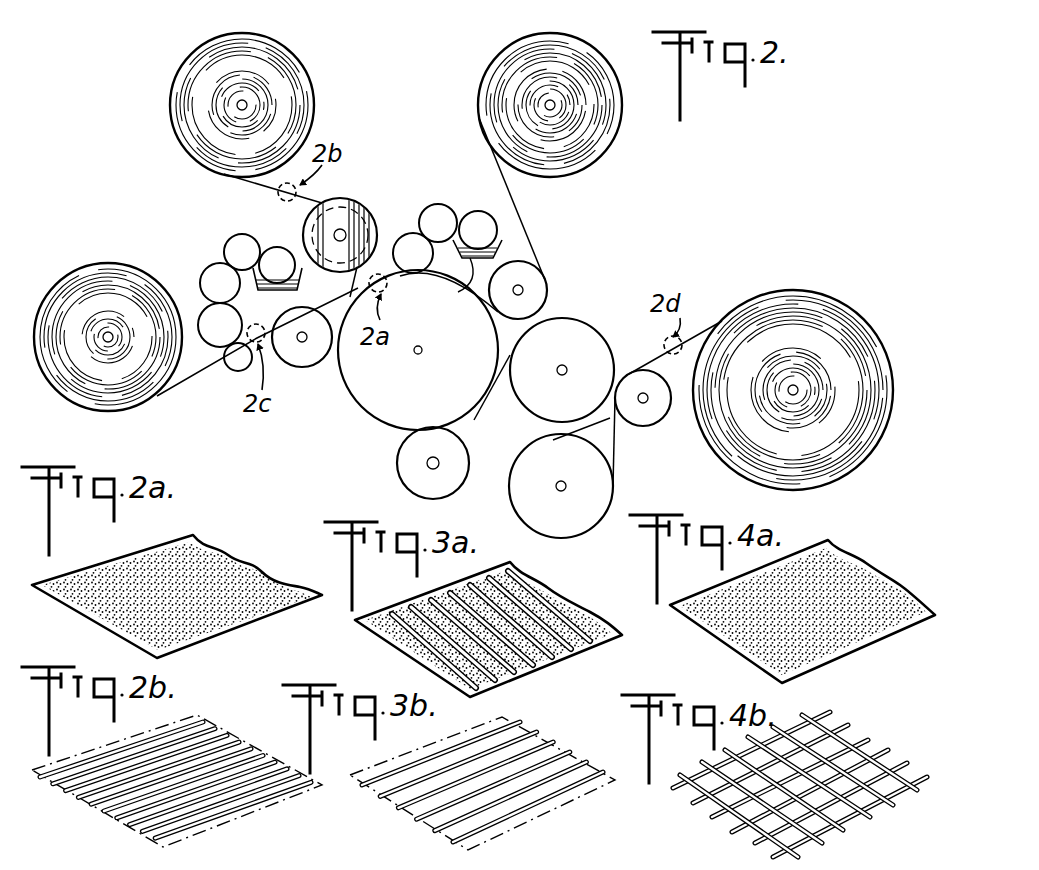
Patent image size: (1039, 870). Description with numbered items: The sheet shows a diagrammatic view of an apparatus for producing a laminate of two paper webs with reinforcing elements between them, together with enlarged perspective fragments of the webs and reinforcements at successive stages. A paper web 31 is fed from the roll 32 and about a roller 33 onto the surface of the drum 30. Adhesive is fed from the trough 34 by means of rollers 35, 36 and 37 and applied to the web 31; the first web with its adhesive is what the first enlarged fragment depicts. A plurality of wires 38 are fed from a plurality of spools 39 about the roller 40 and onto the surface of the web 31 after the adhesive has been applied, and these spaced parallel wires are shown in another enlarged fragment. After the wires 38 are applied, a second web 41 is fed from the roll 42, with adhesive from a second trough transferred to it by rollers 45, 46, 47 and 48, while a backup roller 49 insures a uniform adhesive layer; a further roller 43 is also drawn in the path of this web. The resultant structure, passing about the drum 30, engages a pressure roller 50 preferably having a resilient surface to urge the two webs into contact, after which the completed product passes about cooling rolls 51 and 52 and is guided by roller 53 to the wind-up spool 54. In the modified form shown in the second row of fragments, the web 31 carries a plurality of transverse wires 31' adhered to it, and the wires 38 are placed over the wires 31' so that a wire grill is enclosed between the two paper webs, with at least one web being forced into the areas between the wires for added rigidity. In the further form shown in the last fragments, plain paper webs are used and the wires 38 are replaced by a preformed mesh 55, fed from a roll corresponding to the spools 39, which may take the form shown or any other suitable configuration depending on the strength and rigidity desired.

In FIG. 2, the drum 30 is at (424, 397).
In FIG. 2, the paper web 31 is at (530, 199).
In FIG. 2A, the paper web 31 is at (177, 584).
In FIG. 3A, the paper web 31 is at (499, 629).
In FIG. 4A, the paper web 31 is at (802, 603).
In FIG. 3A, the transverse wires 31' is at (503, 622).
In FIG. 2, the roll 32 is at (605, 75).
In FIG. 2, the roller 33 is at (540, 283).
In FIG. 2, the trough 34 is at (462, 284).
In FIG. 2, the roller 35 is at (473, 211).
In FIG. 2, the roller 36 is at (434, 204).
In FIG. 2, the roller 37 is at (405, 233).
In FIG. 2, the wires 38 is at (305, 196).
In FIG. 2B, the wires 38 is at (229, 742).
In FIG. 3B, the wires 38 is at (559, 748).
In FIG. 2, the spools 39 is at (311, 75).
In FIG. 2, the roller 40 is at (363, 202).
In FIG. 2, the second web 41 is at (172, 388).
In FIG. 2, the roll 42 is at (113, 263).
In FIG. 2, the guide roll 43 is at (303, 368).
In FIG. 2, the roller 45 is at (284, 236).
In FIG. 2, the roller 46 is at (243, 234).
In FIG. 2, the roller 47 is at (212, 265).
In FIG. 2, the roller 48 is at (200, 302).
In FIG. 2, the backup roller 49 is at (233, 371).
In FIG. 2, the pressure roller 50 is at (404, 456).
In FIG. 2, the cooling roll 51 is at (572, 356).
In FIG. 2, the cooling roll 52 is at (571, 472).
In FIG. 2, the roller 53 is at (645, 420).
In FIG. 2, the wind-up spool 54 is at (798, 294).
In FIG. 4B, the preformed mesh 55 is at (863, 736).